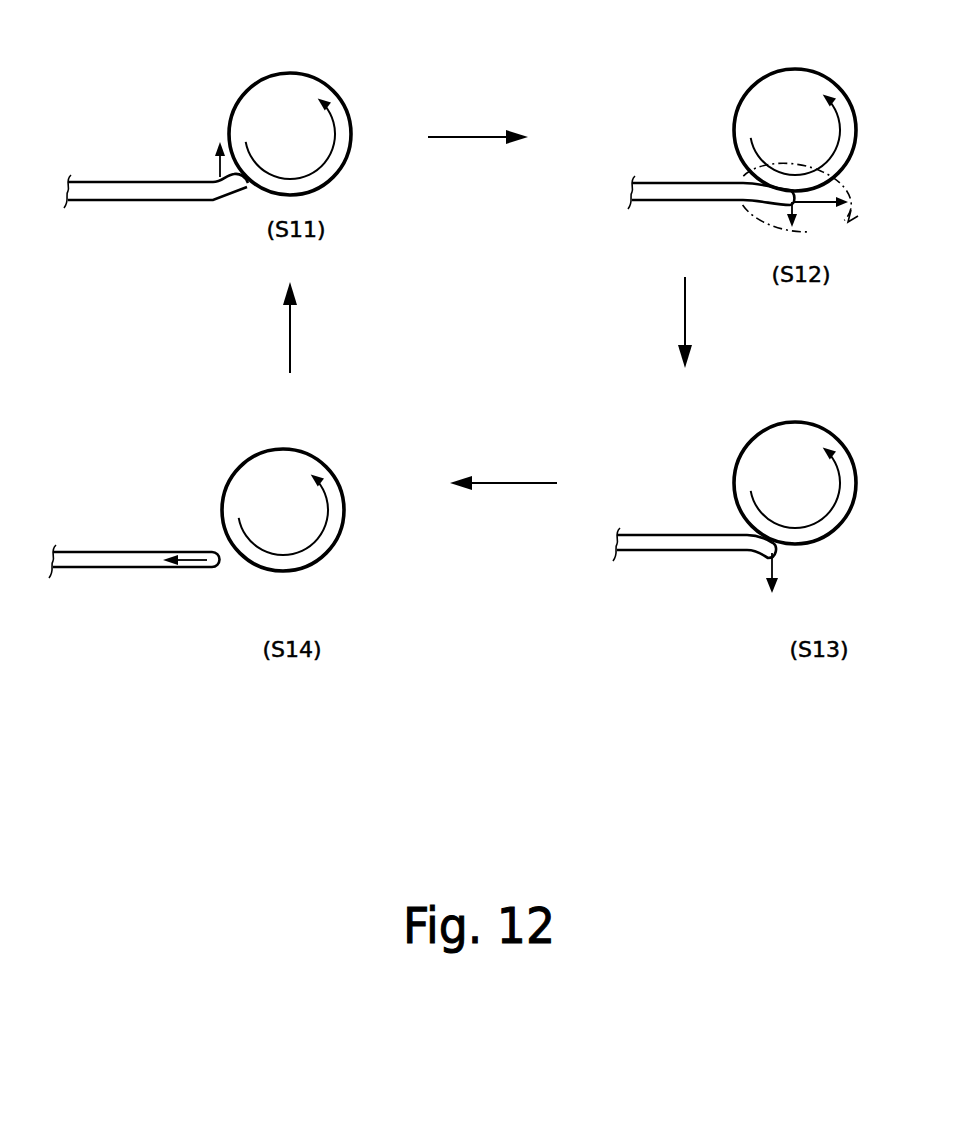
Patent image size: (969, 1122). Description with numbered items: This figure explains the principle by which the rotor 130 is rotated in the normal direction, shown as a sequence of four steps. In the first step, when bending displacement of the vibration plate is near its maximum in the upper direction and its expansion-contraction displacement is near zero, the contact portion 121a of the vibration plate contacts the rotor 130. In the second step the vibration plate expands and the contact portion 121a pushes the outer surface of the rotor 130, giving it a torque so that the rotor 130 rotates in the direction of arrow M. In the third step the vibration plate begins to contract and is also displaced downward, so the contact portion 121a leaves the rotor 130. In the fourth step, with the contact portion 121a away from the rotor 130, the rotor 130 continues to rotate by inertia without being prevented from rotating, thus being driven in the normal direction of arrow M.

The rotor 130 is at (290, 88).
The contact portion 121a is at (131, 190).
The arrow M is at (539, 325).